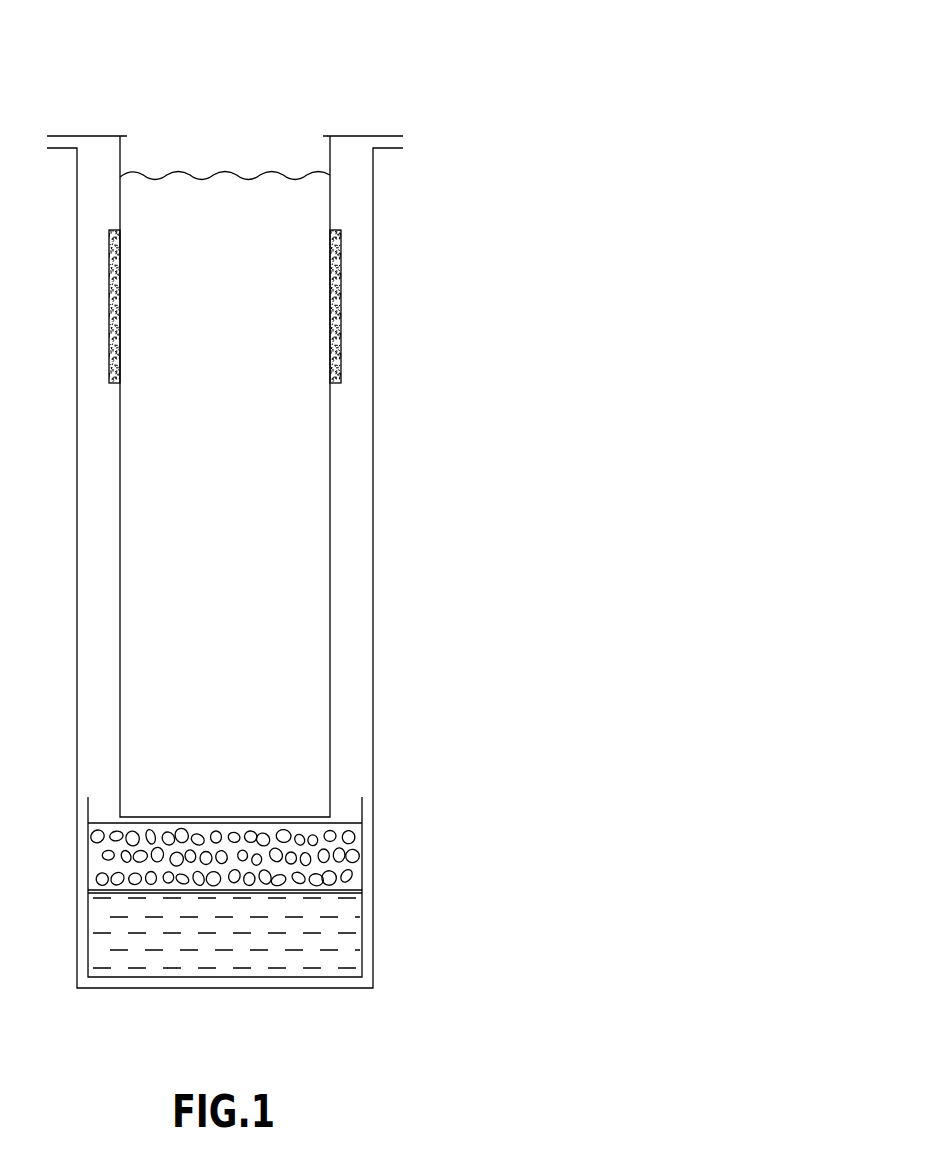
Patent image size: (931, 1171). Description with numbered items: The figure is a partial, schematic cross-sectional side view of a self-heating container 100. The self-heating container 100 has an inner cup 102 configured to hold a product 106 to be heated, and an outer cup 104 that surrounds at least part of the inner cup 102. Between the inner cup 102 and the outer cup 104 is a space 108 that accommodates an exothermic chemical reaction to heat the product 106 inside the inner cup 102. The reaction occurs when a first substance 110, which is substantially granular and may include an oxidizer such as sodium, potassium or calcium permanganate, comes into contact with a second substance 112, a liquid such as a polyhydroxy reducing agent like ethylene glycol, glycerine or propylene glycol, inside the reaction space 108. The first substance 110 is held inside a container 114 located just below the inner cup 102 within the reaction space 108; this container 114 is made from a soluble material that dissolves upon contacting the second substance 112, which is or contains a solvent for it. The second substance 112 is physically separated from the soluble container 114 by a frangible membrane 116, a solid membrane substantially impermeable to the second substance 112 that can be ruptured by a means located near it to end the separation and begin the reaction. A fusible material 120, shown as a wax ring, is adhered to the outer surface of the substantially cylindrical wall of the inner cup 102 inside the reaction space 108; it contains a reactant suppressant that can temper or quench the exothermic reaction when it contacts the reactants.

The self-heating container 100 is at (485, 106).
The inner cup 102 is at (330, 395).
The outer cup 104 is at (383, 528).
The product 106 is at (238, 466).
The space 108 is at (345, 645).
The first substance 110 is at (355, 835).
The second substance 112 is at (352, 943).
The container 114 is at (362, 868).
The frangible membrane 116 is at (294, 908).
The fusible material 120 is at (356, 283).